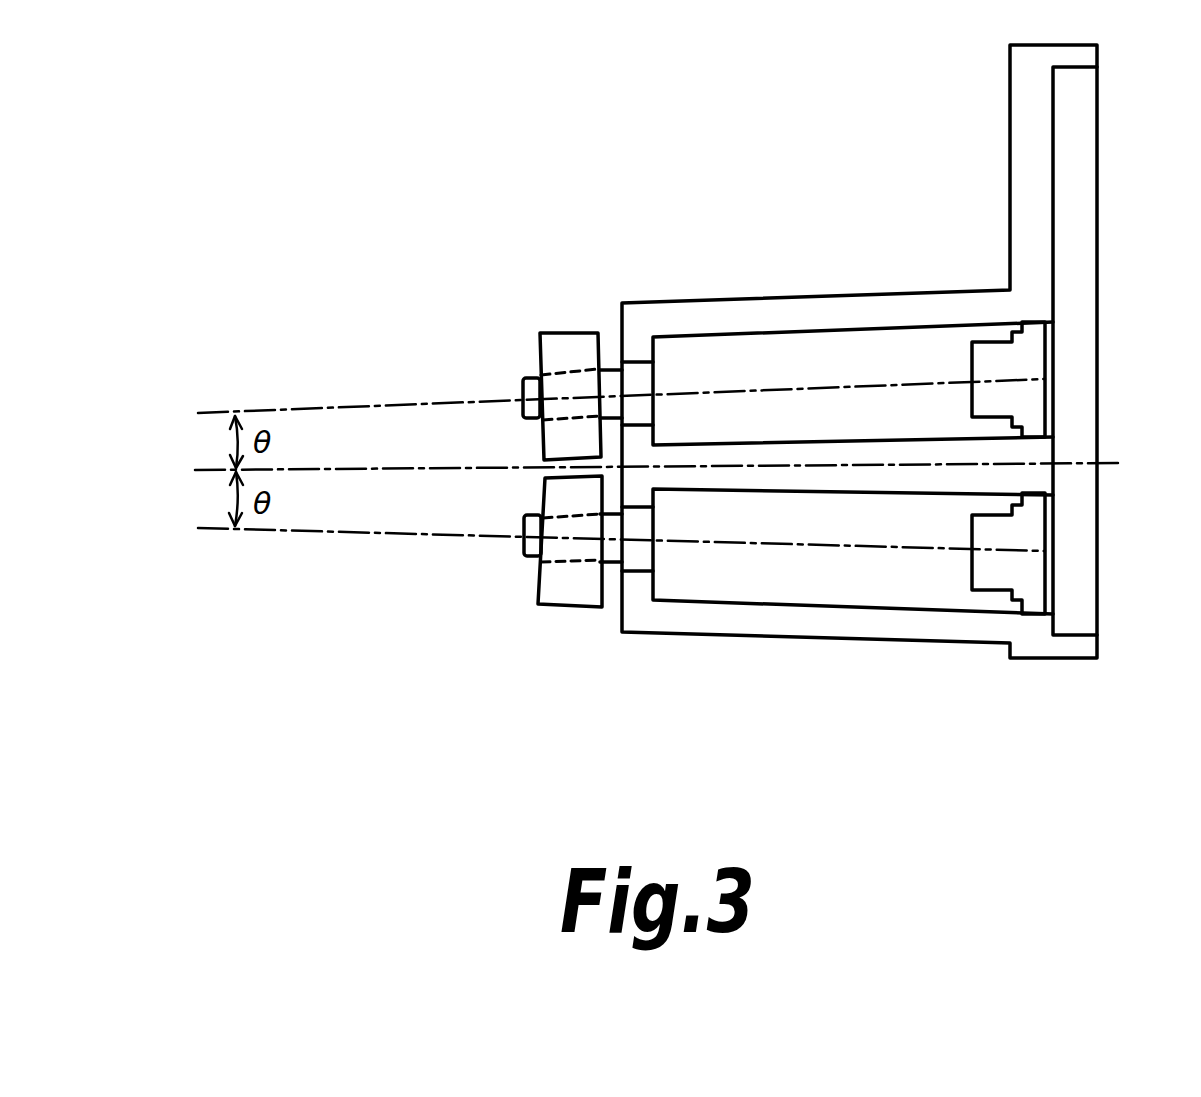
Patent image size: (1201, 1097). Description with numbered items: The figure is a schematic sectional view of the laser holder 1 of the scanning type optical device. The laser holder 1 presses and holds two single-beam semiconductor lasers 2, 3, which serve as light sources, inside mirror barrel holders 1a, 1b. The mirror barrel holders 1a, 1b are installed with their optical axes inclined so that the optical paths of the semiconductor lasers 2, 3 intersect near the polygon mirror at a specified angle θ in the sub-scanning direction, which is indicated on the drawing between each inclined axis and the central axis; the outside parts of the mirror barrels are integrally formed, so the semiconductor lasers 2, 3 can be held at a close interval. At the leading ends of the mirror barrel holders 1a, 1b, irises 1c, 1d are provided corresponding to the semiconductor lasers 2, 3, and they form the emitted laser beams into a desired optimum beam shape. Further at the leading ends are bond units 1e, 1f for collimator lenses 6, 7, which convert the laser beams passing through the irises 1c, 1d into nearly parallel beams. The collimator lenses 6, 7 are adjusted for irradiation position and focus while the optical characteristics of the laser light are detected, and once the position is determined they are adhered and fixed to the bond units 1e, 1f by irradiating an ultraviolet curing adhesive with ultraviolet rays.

The laser holder 1 is at (1033, 168).
The mirror barrel holder 1a is at (892, 608).
The mirror barrel holder 1b is at (908, 326).
The iris 1c is at (640, 633).
The iris 1d is at (638, 340).
The bond unit 1e is at (525, 548).
The bond unit 1f is at (525, 382).
The semiconductor laser 2 is at (1028, 578).
The semiconductor laser 3 is at (1032, 395).
The collimator lens 6 is at (566, 604).
The collimator lens 7 is at (563, 333).